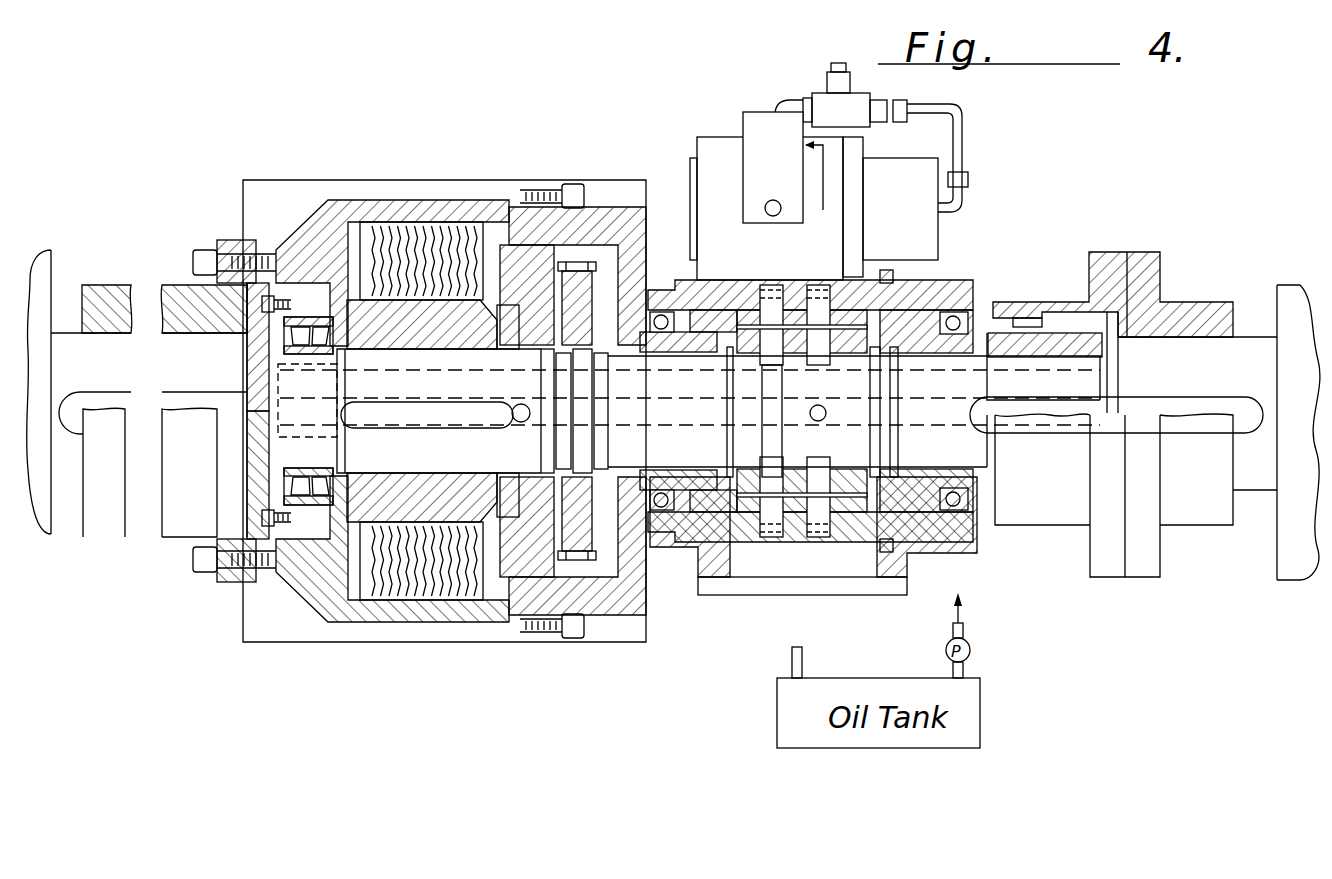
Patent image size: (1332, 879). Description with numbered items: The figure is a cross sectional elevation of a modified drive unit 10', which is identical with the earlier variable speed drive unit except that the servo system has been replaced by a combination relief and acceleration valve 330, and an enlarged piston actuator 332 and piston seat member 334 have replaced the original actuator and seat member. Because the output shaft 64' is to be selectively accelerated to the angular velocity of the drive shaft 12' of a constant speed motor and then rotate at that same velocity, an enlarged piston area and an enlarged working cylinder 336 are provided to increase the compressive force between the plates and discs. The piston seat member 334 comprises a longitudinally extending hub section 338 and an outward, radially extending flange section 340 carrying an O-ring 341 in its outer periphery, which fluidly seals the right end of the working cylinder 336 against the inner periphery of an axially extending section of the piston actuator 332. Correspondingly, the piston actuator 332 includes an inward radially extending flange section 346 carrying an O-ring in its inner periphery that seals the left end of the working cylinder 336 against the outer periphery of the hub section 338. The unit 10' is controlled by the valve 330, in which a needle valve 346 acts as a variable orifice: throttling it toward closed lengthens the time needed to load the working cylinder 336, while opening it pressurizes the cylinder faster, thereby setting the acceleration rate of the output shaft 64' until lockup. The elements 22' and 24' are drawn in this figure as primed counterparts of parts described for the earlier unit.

The modified drive unit 10' is at (444, 382).
The drive shaft 12' is at (137, 393).
The springs 22' is at (421, 375).
The pressure plate drum 24' is at (433, 407).
The combination relief and acceleration valve 330 is at (727, 163).
The piston actuator 332 is at (565, 238).
The piston seat member 334 is at (605, 300).
The working cylinder 336 is at (550, 283).
The hub section 338 is at (546, 360).
The flange section 340 is at (587, 287).
The O-ring 341 is at (577, 267).
The inward radially extending flange section / needle valve 346 is at (535, 315).
The output shaft 64' is at (1120, 416).